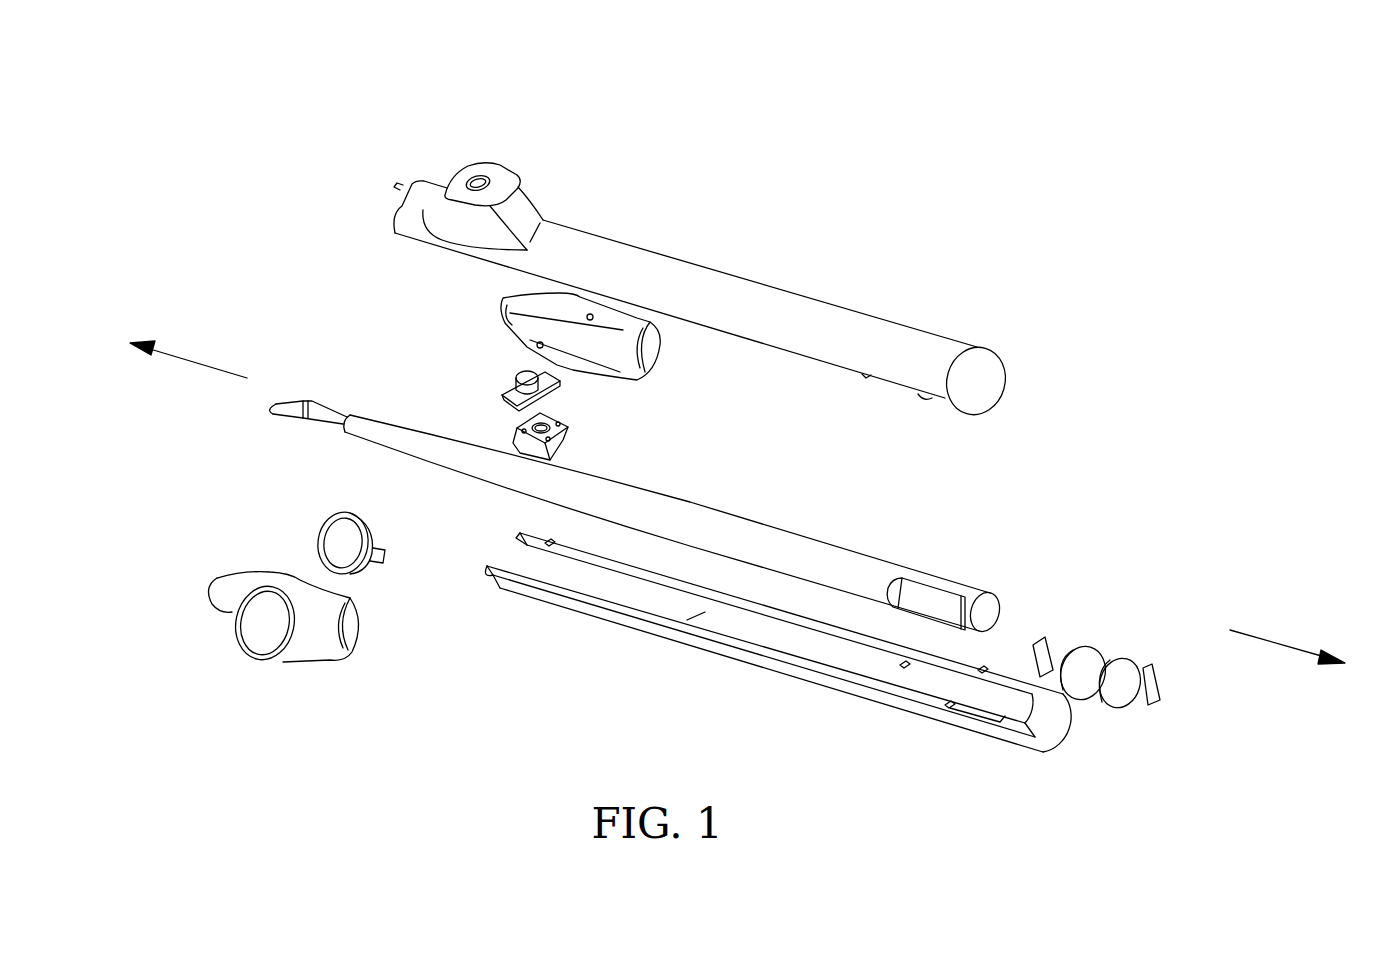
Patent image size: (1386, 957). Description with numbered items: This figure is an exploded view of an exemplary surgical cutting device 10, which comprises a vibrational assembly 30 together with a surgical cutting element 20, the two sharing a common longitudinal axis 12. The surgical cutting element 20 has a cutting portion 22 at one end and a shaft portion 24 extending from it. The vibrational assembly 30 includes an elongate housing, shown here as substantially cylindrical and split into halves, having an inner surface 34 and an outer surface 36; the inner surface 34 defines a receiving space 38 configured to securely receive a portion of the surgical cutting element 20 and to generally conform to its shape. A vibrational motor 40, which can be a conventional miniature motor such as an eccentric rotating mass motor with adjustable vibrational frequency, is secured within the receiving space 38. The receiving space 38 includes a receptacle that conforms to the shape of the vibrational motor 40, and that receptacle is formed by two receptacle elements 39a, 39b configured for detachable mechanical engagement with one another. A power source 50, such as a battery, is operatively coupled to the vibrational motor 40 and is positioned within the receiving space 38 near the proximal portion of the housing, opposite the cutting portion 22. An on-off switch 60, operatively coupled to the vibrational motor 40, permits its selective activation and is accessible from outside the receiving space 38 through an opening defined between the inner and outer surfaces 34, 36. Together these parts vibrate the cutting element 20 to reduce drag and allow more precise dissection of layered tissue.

The surgical cutting device 10 is at (211, 108).
The longitudinal axis 12 is at (170, 354).
The surgical cutting element 20 is at (310, 371).
The cutting portion 22 is at (323, 408).
The shaft portion 24 is at (775, 536).
The vibrational assembly 30 is at (537, 152).
The inner surface 34 is at (512, 556).
The outer surface 36 is at (500, 594).
The receiving space 38 is at (690, 620).
The receptacle element 39a is at (247, 578).
The receptacle element 39b is at (660, 352).
The vibrational motor 40 is at (332, 512).
The power source 50 is at (1052, 633).
The on-off switch 60 is at (570, 458).